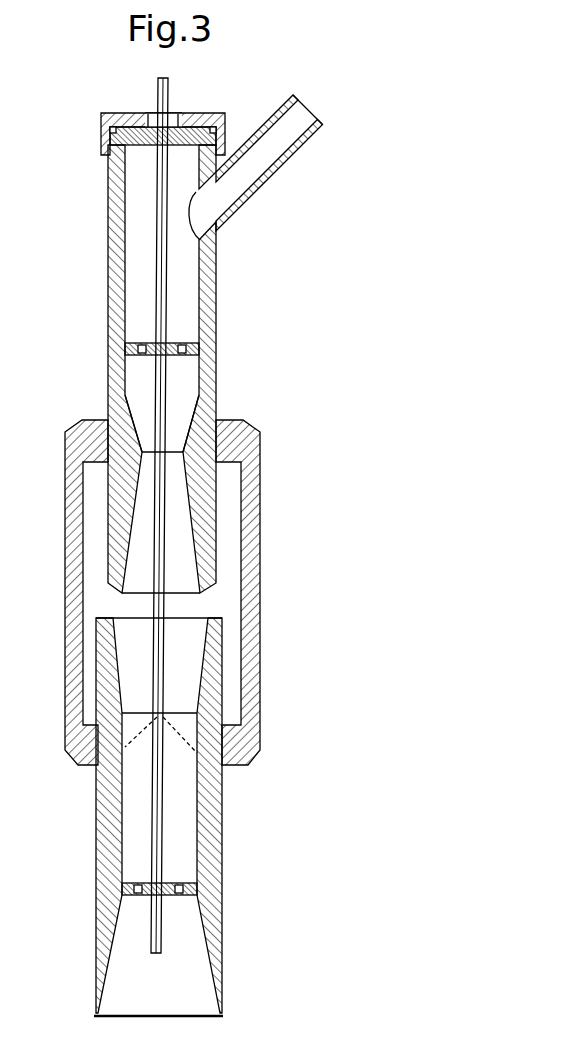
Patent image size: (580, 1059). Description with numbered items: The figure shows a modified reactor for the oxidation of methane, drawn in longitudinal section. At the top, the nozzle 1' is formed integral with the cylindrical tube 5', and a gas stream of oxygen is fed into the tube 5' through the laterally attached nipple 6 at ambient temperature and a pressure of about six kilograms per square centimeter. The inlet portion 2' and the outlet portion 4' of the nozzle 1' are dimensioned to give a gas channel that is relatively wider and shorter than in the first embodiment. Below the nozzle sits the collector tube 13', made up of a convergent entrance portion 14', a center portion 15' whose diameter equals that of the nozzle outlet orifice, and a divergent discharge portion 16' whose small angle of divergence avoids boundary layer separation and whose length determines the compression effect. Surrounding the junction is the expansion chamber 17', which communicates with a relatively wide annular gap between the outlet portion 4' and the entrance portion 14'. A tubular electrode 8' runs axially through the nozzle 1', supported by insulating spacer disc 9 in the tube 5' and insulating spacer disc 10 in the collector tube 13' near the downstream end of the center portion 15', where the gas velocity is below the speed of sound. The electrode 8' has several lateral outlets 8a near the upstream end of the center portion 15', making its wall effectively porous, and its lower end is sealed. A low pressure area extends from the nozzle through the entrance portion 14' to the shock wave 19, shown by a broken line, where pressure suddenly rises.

The nozzle 1' is at (200, 353).
The inlet portion 2' is at (194, 419).
The outlet portion 4' is at (210, 407).
The cylindrical tube 5' is at (228, 218).
The nipple 6 is at (280, 170).
The tubular electrode 8' is at (119, 515).
The lateral outlets 8a is at (152, 742).
The insulating spacer disc 9 is at (130, 357).
The insulating spacer disc 10 is at (122, 888).
The collector tube 13' is at (157, 817).
The entrance portion 14' is at (123, 815).
The center portion 15' is at (241, 815).
The divergent discharge portion 16' is at (196, 975).
The expansion chamber 17' is at (143, 592).
The shock wave 19 is at (174, 722).